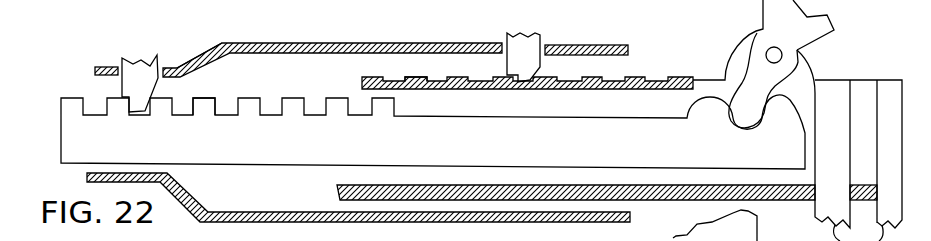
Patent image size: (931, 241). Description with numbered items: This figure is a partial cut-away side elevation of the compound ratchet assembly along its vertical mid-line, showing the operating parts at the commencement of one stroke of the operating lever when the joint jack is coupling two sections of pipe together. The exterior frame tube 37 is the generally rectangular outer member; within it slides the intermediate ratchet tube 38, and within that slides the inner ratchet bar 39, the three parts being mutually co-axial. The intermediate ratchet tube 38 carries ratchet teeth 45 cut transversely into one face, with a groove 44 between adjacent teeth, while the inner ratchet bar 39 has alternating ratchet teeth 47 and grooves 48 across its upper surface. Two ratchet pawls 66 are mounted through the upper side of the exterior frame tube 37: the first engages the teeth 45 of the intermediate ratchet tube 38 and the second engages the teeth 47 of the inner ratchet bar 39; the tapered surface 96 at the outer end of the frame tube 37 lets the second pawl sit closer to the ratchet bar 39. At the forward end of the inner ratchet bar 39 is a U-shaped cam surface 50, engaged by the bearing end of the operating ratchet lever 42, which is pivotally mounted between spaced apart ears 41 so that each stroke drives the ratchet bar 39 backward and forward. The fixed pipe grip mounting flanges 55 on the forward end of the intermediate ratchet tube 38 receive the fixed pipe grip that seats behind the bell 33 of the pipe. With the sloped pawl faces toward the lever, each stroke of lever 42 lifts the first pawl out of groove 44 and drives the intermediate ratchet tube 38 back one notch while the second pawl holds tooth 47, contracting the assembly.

The bell 33 is at (633, 2).
The exterior frame tube 37 is at (245, 40).
The intermediate ratchet tube 38 is at (679, 72).
The inner ratchet bar 39 is at (56, 122).
The spaced apart ears 41 is at (811, 73).
The operating ratchet lever 42 is at (830, 12).
The groove 44 is at (405, 64).
The ratchet teeth 45 is at (502, 77).
The ratchet teeth 47 is at (98, 98).
The grooves 48 is at (227, 101).
The cam surface 50 is at (748, 126).
The fixed pipe grip mounting flanges 55 is at (858, 233).
The ratchet pawl 66 is at (127, 23).
The tapered surface 96 is at (195, 53).